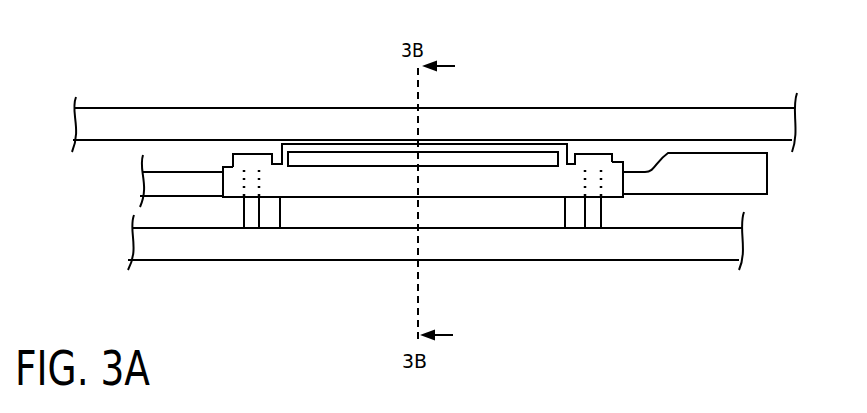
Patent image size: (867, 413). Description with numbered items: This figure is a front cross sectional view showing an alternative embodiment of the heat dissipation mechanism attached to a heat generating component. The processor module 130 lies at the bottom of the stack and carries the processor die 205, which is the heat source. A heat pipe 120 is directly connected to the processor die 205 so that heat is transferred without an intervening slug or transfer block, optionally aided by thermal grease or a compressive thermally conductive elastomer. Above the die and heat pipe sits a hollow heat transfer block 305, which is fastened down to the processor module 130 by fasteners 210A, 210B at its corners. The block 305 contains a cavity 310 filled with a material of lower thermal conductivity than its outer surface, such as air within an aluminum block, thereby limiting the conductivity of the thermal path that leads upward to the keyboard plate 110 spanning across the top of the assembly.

The keyboard plate 110 is at (757, 131).
The heat pipe 120 is at (737, 183).
The processor module 130 is at (711, 251).
The processor die 205 is at (539, 222).
The fastener 210A is at (242, 209).
The fastener 210B is at (603, 208).
The hollow heat transfer block 305 is at (568, 144).
The cavity 310 is at (487, 150).